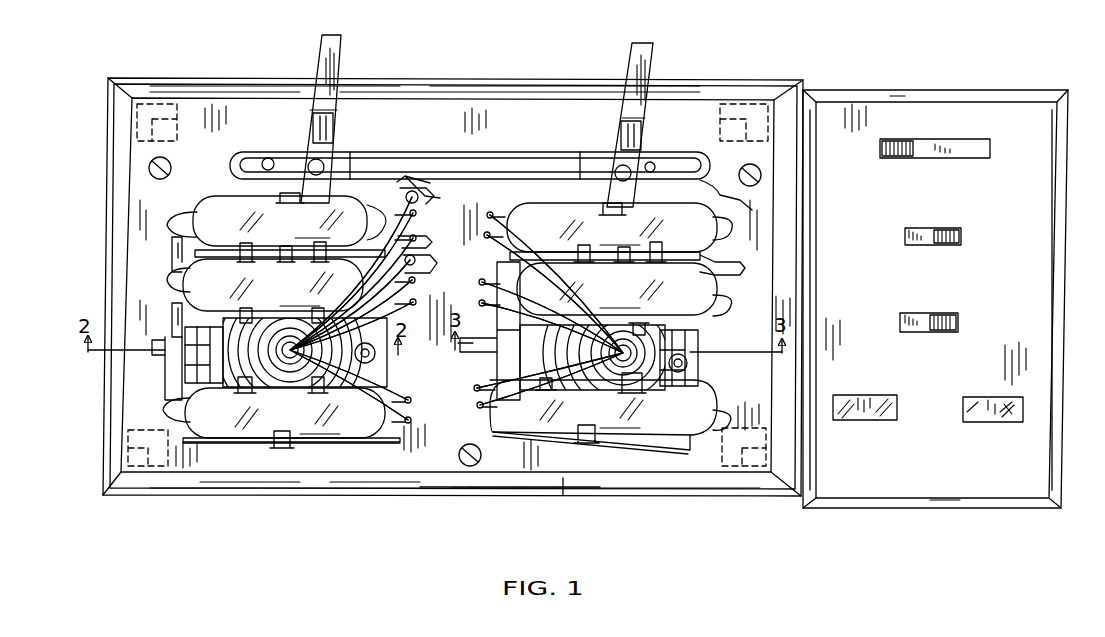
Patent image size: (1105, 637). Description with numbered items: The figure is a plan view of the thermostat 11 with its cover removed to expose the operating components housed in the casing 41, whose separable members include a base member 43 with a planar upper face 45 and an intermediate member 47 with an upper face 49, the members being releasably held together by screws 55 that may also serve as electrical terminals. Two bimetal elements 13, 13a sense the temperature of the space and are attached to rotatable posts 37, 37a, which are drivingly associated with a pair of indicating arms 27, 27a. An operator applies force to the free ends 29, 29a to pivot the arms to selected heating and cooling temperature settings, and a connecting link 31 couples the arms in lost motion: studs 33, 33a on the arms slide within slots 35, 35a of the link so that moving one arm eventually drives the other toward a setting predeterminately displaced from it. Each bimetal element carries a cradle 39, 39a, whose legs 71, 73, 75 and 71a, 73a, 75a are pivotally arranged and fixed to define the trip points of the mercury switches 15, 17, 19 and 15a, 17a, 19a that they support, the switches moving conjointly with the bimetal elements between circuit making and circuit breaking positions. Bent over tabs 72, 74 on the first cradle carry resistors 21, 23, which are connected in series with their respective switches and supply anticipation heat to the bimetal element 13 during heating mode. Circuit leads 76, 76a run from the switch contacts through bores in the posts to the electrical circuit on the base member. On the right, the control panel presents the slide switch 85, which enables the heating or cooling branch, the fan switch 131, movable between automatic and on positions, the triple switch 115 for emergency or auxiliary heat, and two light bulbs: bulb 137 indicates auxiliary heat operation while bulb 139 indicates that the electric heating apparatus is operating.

The thermostat 11 is at (873, 91).
The bimetal element 13 is at (350, 372).
The bimetal element 13a is at (662, 384).
The mercury switch 15 is at (195, 216).
The mercury switch 15a is at (715, 240).
The mercury switch 17 is at (182, 285).
The mercury switch 17a is at (716, 306).
The mercury switch 19 is at (182, 417).
The mercury switch 19a is at (700, 435).
The resistor 21 is at (420, 204).
The resistor 23 is at (432, 263).
The indicating arm 27 is at (337, 120).
The indicating arm 27a is at (620, 126).
The free end 29 is at (343, 64).
The free end 29a is at (631, 68).
The connecting link 31 is at (526, 174).
The stud 33 is at (325, 164).
The stud 33a is at (616, 170).
The slot 35 is at (268, 162).
The slot 35a is at (648, 165).
The post 37 is at (297, 372).
The post 37a is at (602, 375).
The cradle 39 is at (265, 473).
The cradle 39a is at (666, 446).
The casing 41 is at (252, 496).
The base member 43 is at (448, 495).
The upper face 45 is at (496, 490).
The intermediate member 47 is at (545, 485).
The upper face 49 is at (575, 470).
The screw 55 is at (165, 158).
The leg 71 is at (172, 252).
The leg 71a is at (707, 262).
The bent over tab 72 is at (407, 180).
The leg 73 is at (176, 315).
The leg 73a is at (695, 342).
The bent over tab 74 is at (414, 252).
The leg 75 is at (208, 366).
The leg 75a is at (700, 388).
The circuit lead 76 is at (332, 301).
The circuit lead 76a is at (566, 306).
The slide switch 85 is at (889, 140).
The triple switch 115 is at (945, 332).
The fan switch 131 is at (958, 230).
The light bulb 137 is at (1000, 421).
The light bulb 139 is at (872, 420).